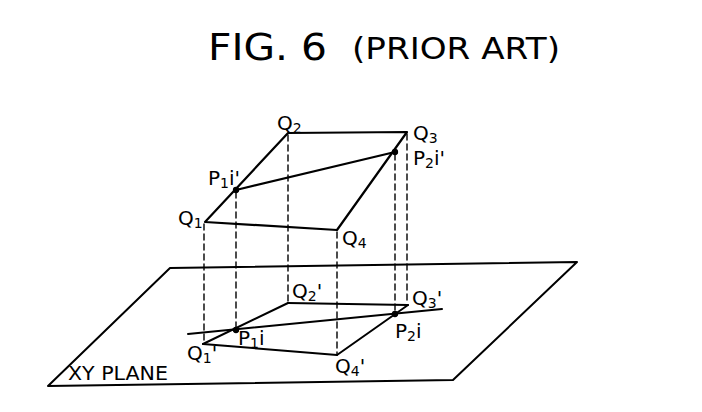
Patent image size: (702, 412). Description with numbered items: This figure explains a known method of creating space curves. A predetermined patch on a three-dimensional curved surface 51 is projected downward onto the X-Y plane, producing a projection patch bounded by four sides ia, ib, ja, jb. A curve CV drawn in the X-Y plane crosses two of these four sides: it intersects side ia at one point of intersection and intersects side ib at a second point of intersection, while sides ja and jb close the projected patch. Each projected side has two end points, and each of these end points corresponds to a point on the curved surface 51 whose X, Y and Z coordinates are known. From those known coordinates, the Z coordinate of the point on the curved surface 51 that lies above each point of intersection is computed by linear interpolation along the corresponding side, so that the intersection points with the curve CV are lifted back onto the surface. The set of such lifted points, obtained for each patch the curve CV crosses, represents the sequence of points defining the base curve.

The image (picture) plane 51 is at (330, 157).
The curve CV is at (430, 312).
The side ia is at (263, 317).
The side ja is at (348, 304).
The side ib is at (366, 338).
The side jb is at (272, 351).